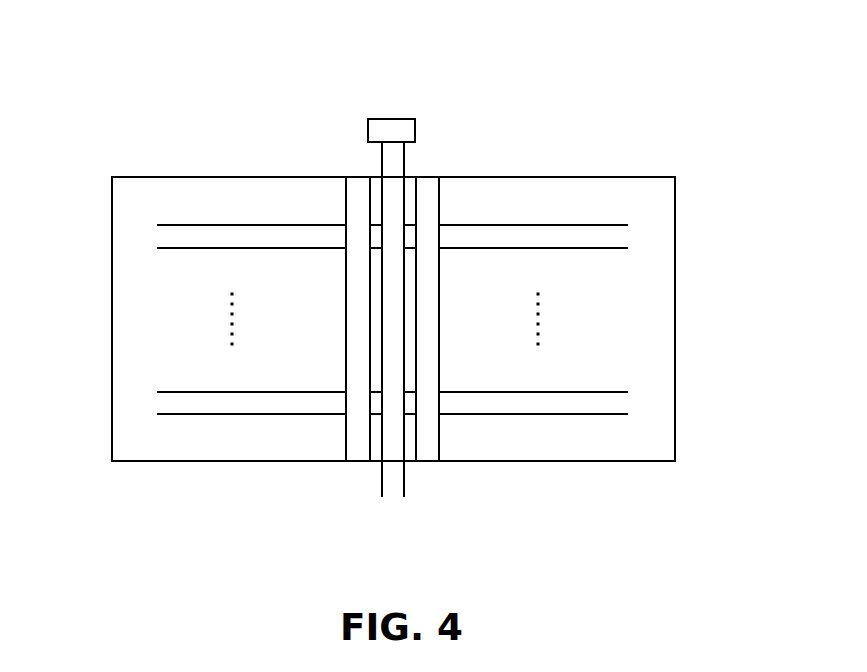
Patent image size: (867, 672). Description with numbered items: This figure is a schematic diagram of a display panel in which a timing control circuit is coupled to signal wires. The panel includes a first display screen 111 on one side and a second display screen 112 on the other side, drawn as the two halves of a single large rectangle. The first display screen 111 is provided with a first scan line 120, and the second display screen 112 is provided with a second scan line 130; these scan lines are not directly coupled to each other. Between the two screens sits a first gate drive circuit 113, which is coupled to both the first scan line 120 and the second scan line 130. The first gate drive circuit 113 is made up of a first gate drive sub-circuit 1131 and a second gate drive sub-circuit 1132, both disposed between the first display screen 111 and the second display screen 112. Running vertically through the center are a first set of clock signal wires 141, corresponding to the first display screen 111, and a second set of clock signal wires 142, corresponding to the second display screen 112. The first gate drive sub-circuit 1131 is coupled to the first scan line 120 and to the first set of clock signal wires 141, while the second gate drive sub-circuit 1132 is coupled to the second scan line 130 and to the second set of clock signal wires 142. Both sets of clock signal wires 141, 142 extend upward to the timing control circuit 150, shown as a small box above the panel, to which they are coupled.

The first display screen 111 is at (135, 413).
The second display screen 112 is at (652, 423).
The first gate drive circuit 113 is at (401, 367).
The first gate drive sub-circuit 1131 is at (357, 450).
The second gate drive sub-circuit 1132 is at (427, 446).
The first scan line 120 is at (168, 248).
The second scan line 130 is at (618, 223).
The first set of clock signal wires 141 is at (380, 162).
The second set of clock signal wires 142 is at (406, 167).
The timing control circuit 150 is at (397, 135).